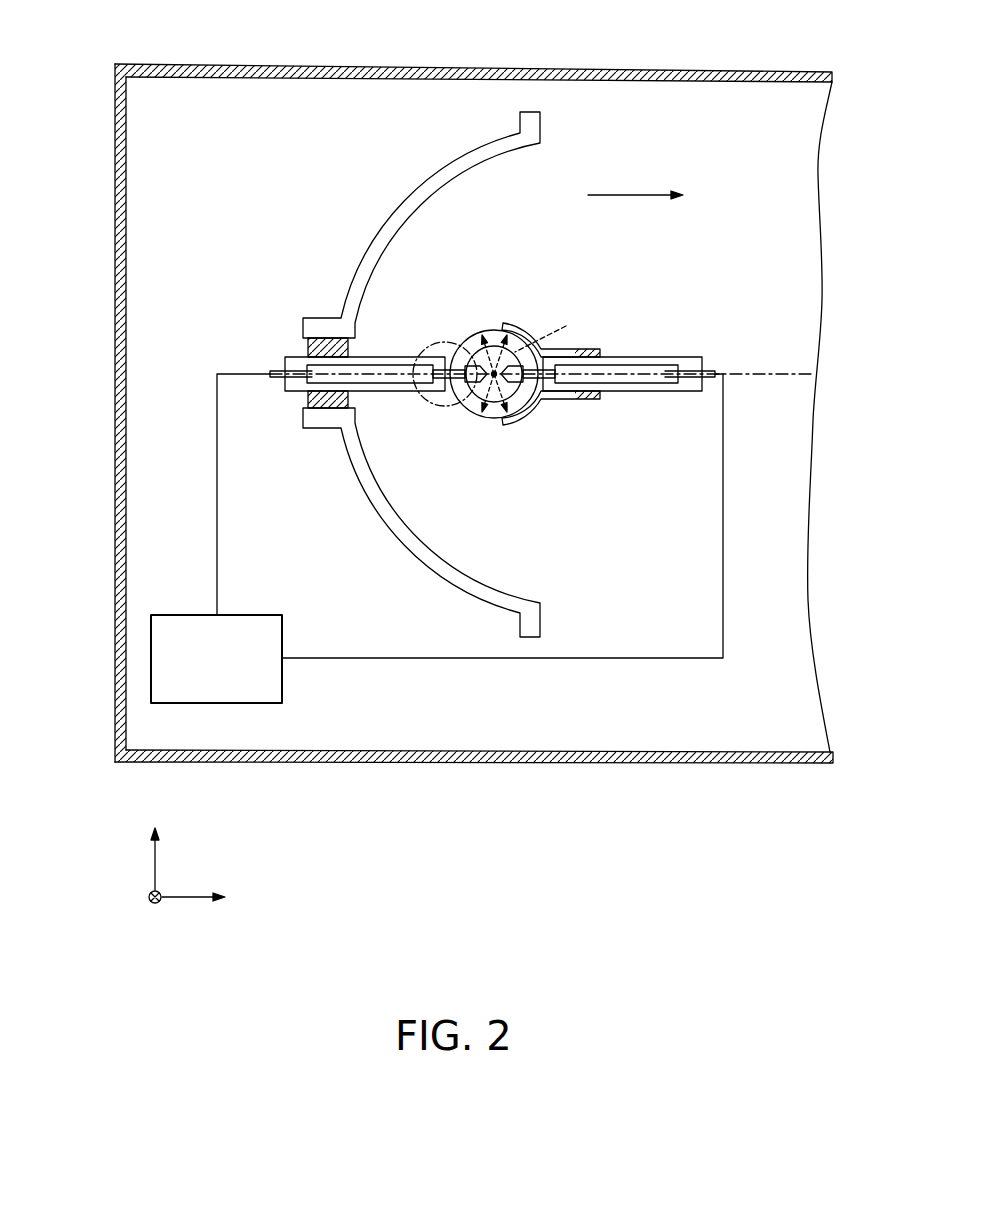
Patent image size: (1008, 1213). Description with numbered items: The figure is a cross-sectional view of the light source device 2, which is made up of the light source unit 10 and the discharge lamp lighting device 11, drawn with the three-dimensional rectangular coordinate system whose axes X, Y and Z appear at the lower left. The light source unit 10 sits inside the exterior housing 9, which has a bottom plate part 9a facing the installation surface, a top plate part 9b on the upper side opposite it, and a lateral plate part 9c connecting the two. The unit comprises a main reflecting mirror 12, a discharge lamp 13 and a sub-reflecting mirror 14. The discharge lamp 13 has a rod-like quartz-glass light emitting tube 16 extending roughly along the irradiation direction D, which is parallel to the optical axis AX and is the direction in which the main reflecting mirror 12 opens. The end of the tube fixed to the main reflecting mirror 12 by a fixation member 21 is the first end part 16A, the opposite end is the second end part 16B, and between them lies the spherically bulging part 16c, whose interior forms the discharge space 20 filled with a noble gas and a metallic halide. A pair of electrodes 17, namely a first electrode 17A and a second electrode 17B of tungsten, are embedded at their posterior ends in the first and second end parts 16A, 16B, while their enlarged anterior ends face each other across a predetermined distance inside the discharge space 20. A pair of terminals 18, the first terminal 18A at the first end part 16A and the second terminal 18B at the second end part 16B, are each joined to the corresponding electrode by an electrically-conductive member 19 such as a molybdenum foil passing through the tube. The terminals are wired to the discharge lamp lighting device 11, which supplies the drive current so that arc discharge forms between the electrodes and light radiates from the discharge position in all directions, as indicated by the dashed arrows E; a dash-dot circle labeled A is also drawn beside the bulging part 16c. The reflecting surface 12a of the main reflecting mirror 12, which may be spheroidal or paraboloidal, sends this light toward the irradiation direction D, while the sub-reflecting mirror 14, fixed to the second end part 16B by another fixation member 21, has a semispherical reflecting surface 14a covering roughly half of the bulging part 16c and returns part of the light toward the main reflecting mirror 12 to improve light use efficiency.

The light source device 2 is at (718, 218).
The exterior housing 9 is at (449, 422).
The bottom plate part 9a is at (456, 764).
The top plate part 9b is at (455, 68).
The lateral plate part 9c is at (115, 98).
The light source unit 10 is at (335, 185).
The discharge lamp lighting device 11 is at (248, 614).
The main reflecting mirror 12 is at (430, 182).
The reflecting surface 12a is at (456, 195).
The discharge lamp 13 is at (500, 370).
The sub-reflecting mirror 14 is at (507, 323).
The reflecting surface 14a is at (532, 336).
The light emitting tube 16 is at (663, 356).
The first end part 16A is at (288, 358).
The second end part 16B is at (683, 358).
The bulging part 16c is at (478, 330).
The pair of electrodes 17 is at (500, 422).
The first electrode 17A is at (468, 383).
The second electrode 17B is at (518, 385).
The pair of terminals 18 is at (482, 425).
The first terminal 18A is at (285, 380).
The second terminal 18B is at (706, 380).
The electrically-conductive member 19 is at (383, 381).
The discharge space 20 is at (494, 380).
The fixation member 21 is at (310, 340).
The region A is at (425, 348).
The optical axis AX is at (763, 372).
The irradiation direction D is at (647, 196).
The dashed arrows E is at (548, 335).
The X axis X is at (204, 898).
The Y axis Y is at (145, 909).
The Z axis Z is at (157, 844).